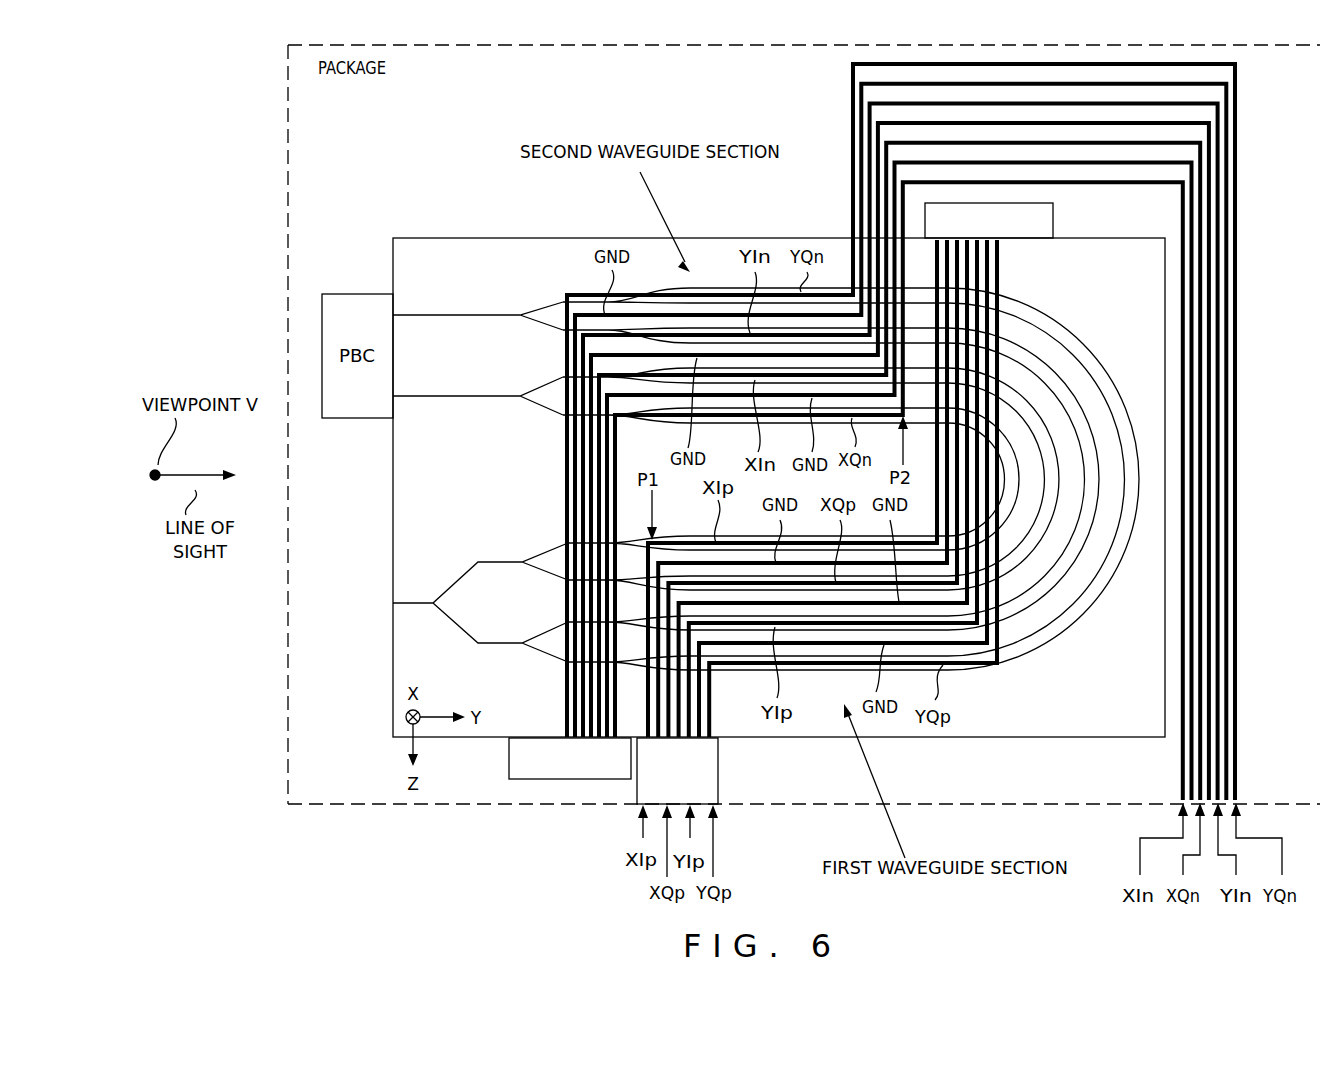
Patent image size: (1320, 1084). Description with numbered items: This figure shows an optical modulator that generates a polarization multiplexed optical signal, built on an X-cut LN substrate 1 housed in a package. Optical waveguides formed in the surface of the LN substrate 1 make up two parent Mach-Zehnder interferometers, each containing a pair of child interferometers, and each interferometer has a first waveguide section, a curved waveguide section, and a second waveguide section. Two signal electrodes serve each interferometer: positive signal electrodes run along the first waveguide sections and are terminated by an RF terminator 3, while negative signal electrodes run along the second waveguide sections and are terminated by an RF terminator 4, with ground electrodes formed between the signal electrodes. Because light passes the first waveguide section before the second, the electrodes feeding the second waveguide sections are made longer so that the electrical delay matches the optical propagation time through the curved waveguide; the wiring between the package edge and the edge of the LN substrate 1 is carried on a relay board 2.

The LN substrate 1 is at (441, 238).
The relay board 2 is at (718, 770).
The RF terminator 3 is at (1058, 218).
The RF terminator 4 is at (509, 762).